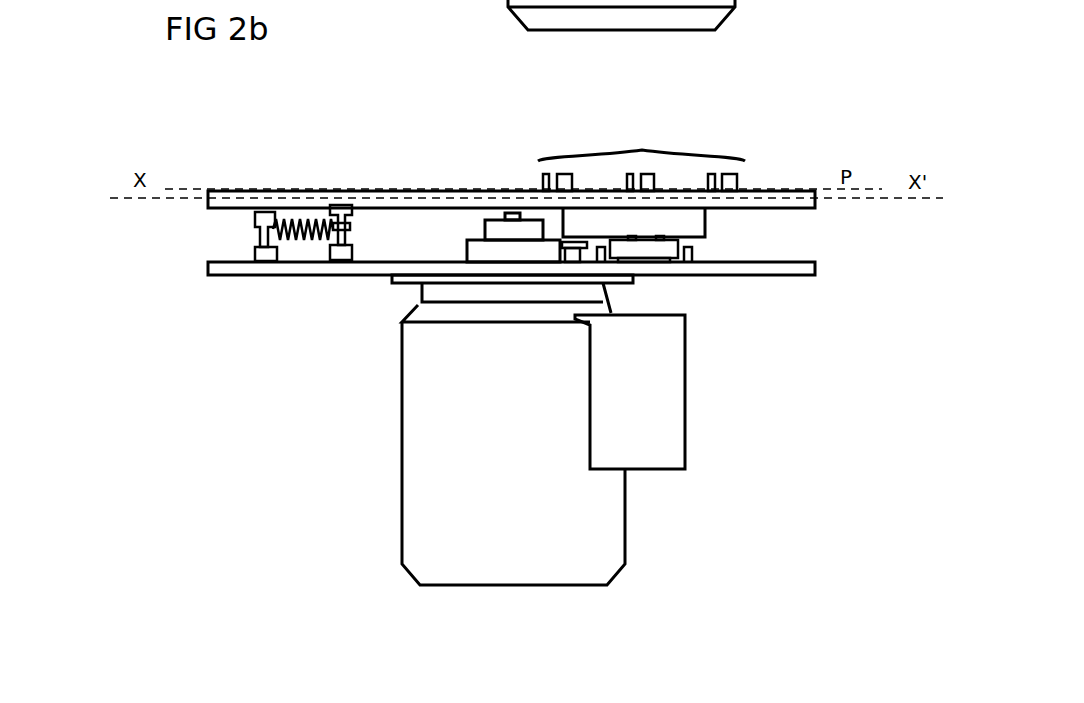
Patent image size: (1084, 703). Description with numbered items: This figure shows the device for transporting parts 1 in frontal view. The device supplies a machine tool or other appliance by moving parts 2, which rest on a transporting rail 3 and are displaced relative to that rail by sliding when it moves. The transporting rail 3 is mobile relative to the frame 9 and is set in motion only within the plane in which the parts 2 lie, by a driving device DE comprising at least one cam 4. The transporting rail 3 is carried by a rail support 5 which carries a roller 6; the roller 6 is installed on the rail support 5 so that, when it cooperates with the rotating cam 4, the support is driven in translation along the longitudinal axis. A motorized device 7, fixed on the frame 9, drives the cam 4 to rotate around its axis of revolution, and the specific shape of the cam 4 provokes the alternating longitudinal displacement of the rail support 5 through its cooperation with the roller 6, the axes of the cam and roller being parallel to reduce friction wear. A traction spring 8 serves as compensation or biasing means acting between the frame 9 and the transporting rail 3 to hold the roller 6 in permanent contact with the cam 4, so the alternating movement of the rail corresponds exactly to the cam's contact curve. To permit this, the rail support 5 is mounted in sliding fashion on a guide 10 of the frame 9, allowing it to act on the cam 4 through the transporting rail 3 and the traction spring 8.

The device for transporting parts 1 is at (104, 451).
The parts 2 is at (661, 138).
The transporting rail 3 is at (391, 188).
The cam 4 is at (500, 258).
The rail support 5 is at (678, 237).
The roller 6 is at (583, 262).
The motorized device 7 is at (387, 448).
The traction spring 8 is at (307, 253).
The frame 9 is at (244, 285).
The guide 10 is at (707, 255).
The driving device DE is at (446, 252).